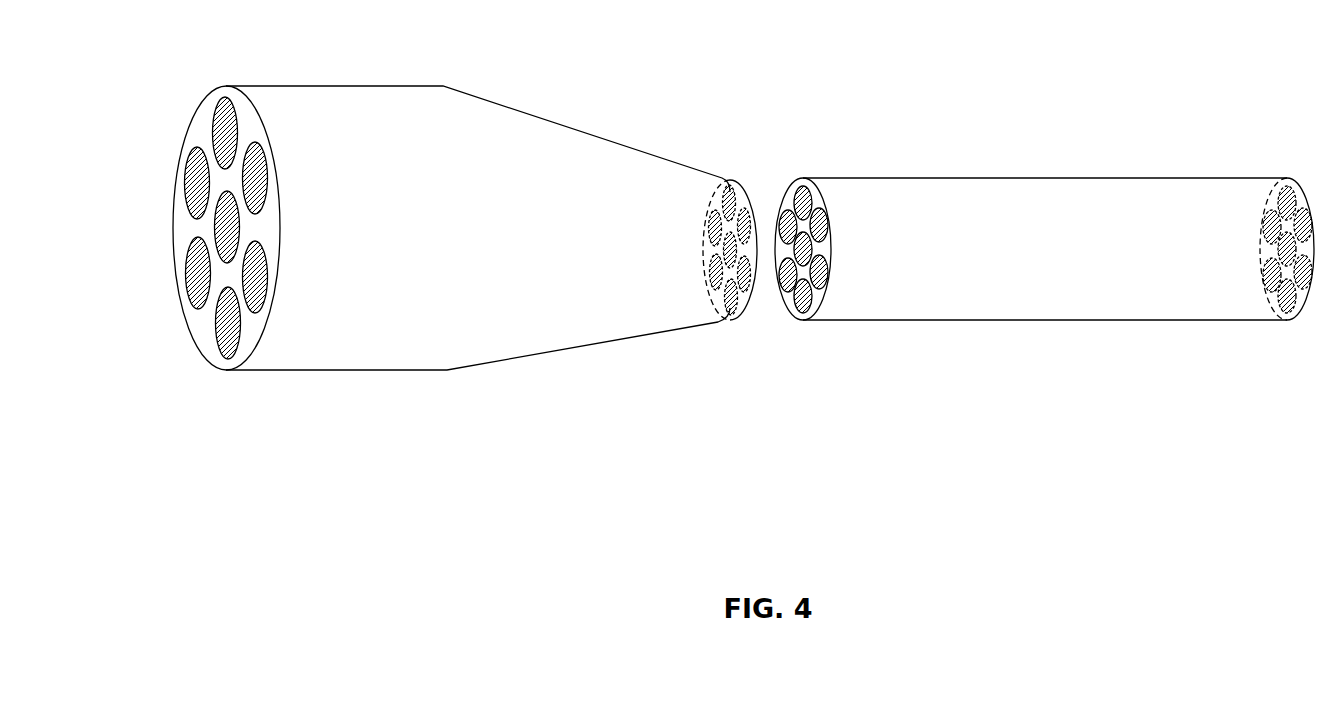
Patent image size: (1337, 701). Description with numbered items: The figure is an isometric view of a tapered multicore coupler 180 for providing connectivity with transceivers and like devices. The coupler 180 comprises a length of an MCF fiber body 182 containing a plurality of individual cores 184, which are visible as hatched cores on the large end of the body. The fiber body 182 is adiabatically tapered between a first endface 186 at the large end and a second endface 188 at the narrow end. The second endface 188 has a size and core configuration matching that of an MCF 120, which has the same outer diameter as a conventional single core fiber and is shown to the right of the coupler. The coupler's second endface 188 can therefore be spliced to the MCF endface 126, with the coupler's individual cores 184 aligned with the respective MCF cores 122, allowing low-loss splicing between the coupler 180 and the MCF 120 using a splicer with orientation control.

The tapered multicore coupler 180 is at (476, 41).
The MCF fiber body 182 is at (475, 230).
The individual cores 184 is at (212, 137).
The first endface 186 is at (176, 227).
The second endface 188 is at (755, 197).
The MCF 120 is at (1064, 168).
The MCF cores 122 is at (784, 277).
The MCF endface 126 is at (798, 302).